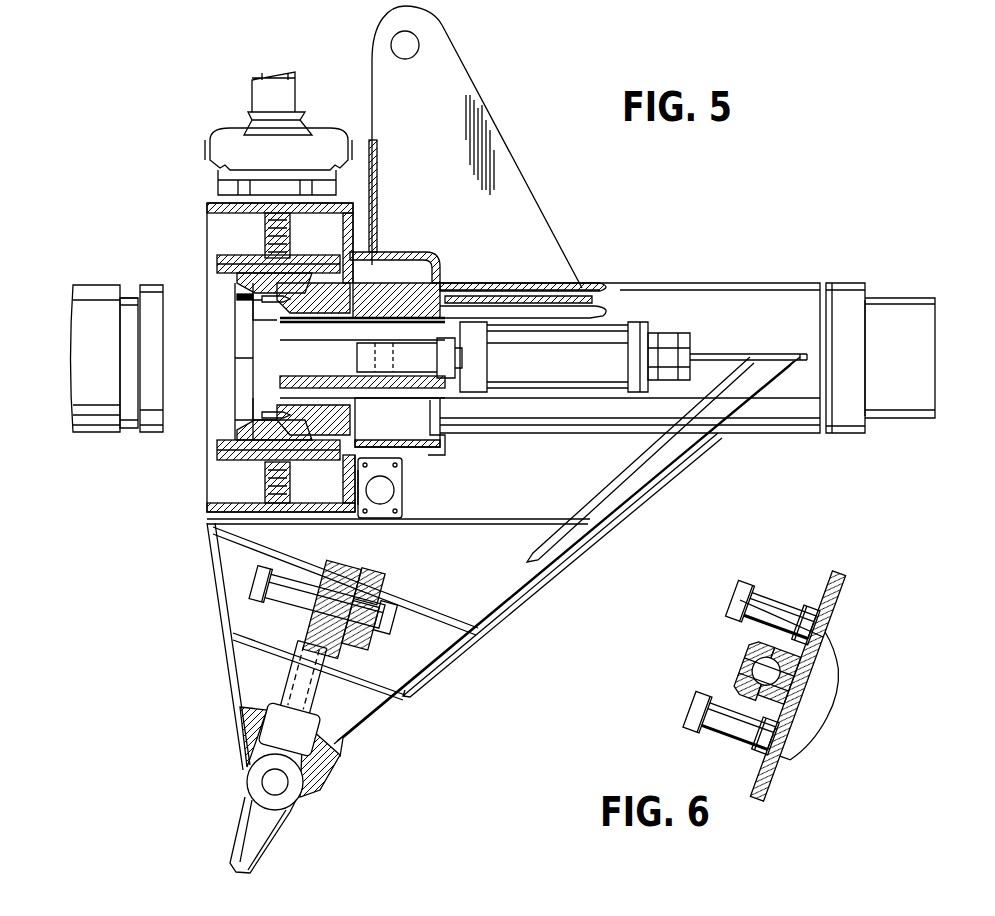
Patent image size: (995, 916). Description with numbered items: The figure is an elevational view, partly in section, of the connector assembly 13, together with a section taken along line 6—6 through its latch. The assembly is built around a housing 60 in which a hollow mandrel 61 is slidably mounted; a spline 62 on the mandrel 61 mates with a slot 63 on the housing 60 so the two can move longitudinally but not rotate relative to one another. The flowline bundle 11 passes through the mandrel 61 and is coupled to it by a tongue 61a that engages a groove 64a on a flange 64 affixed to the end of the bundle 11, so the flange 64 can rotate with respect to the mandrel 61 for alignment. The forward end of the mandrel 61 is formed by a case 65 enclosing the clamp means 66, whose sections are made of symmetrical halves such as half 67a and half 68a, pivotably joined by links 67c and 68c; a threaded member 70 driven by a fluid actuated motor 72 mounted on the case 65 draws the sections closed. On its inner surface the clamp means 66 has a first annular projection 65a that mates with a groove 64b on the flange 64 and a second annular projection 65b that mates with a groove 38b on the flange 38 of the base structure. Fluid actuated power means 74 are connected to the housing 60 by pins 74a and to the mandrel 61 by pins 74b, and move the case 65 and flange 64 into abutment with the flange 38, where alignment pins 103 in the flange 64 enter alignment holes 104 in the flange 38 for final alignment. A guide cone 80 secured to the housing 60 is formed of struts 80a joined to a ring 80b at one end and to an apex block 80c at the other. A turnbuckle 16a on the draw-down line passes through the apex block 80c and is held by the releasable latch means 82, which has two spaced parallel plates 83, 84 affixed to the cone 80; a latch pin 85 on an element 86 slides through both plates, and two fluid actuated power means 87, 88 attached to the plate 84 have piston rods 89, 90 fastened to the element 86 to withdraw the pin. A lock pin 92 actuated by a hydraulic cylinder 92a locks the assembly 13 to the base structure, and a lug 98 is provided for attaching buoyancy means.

In FIG. 5, the flowline bundle 11 is at (893, 298).
In FIG. 5, the connector assembly 13 is at (792, 218).
In FIG. 5, the turnbuckle 16a is at (333, 687).
In FIG. 6, the turnbuckle 16a is at (814, 703).
In FIG. 5, the flange 38 is at (135, 425).
In FIG. 5, the groove 38b is at (130, 298).
In FIG. 5, the housing 60 is at (833, 282).
In FIG. 5, the hollow mandrel 61 is at (592, 293).
In FIG. 5, the tongue 61a is at (350, 290).
In FIG. 5, the spline 62 is at (491, 294).
In FIG. 5, the slot 63 is at (606, 296).
In FIG. 5, the flange 64 is at (360, 306).
In FIG. 5, the groove 64a is at (358, 436).
In FIG. 5, the groove 64b is at (302, 415).
In FIG. 5, the case 65 is at (210, 500).
In FIG. 5, the first annular projection 65a is at (305, 298).
In FIG. 5, the second annular projection 65b is at (242, 292).
In FIG. 5, the clamp means 66 is at (226, 349).
In FIG. 5, the half of clamp section 67a is at (237, 298).
In FIG. 5, the link 67c is at (230, 270).
In FIG. 5, the half of clamp section 68a is at (238, 420).
In FIG. 5, the link 68c is at (218, 458).
In FIG. 5, the threaded member 70 is at (265, 228).
In FIG. 5, the fluid actuated motor 72 is at (252, 112).
In FIG. 5, the fluid actuated power means 74 is at (562, 390).
In FIG. 5, the pin 74a is at (674, 333).
In FIG. 5, the pin 74b is at (383, 358).
In FIG. 5, the guide cone 80 is at (698, 472).
In FIG. 5, the strut 80a is at (632, 511).
In FIG. 5, the ring 80b is at (760, 353).
In FIG. 5, the apex block 80c is at (332, 775).
In FIG. 5, the releasable latch means 82 is at (335, 631).
In FIG. 6, the releasable latch means 82 is at (670, 703).
In FIG. 5, the plate 83 is at (282, 671).
In FIG. 6, the plate 83 is at (730, 664).
In FIG. 5, the plate 84 is at (356, 621).
In FIG. 6, the plate 84 is at (838, 701).
In FIG. 5, the latch pin 85 is at (385, 638).
In FIG. 6, the latch pin 85 is at (824, 679).
In FIG. 5, the element 86 is at (397, 584).
In FIG. 6, the element 86 is at (847, 700).
In FIG. 5, the fluid actuated power means 87 is at (318, 619).
In FIG. 6, the fluid actuated power means 87 is at (780, 589).
In FIG. 6, the fluid actuated power means 88 is at (708, 741).
In FIG. 6, the piston rod 89 is at (847, 616).
In FIG. 6, the piston rod 90 is at (815, 746).
In FIG. 5, the lock pin 92 is at (390, 489).
In FIG. 5, the hydraulic cylinder 92a is at (395, 470).
In FIG. 5, the lug 98 is at (466, 84).
In FIG. 5, the alignment pin 103 is at (266, 299).
In FIG. 5, the alignment hole 104 is at (148, 290).
In FIG. 5, the section line 6 is at (236, 543).